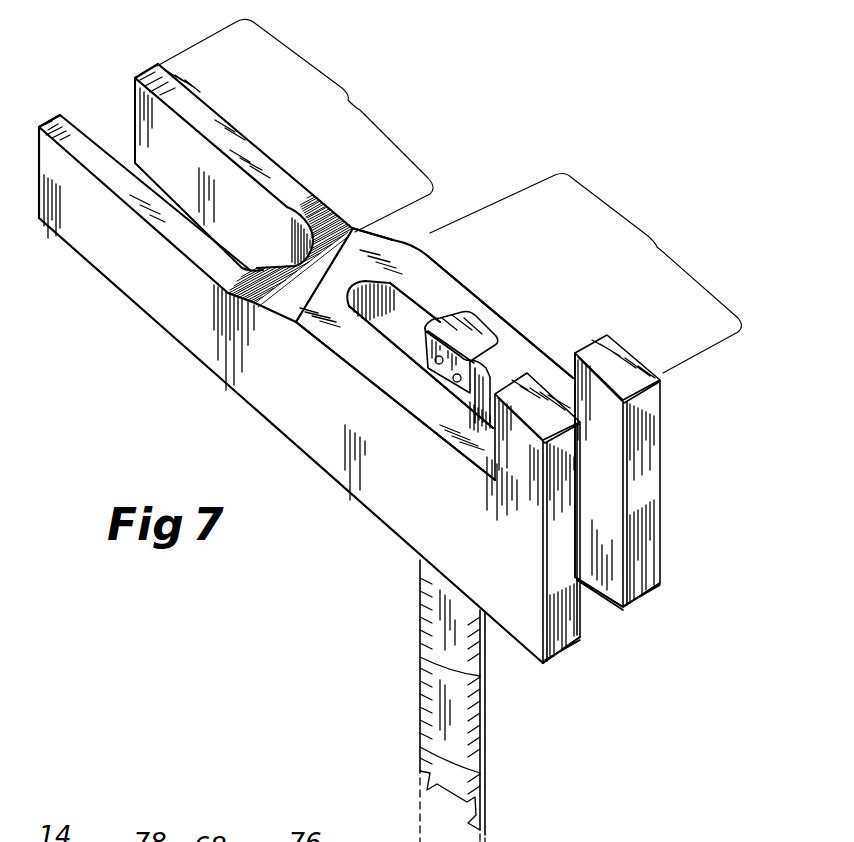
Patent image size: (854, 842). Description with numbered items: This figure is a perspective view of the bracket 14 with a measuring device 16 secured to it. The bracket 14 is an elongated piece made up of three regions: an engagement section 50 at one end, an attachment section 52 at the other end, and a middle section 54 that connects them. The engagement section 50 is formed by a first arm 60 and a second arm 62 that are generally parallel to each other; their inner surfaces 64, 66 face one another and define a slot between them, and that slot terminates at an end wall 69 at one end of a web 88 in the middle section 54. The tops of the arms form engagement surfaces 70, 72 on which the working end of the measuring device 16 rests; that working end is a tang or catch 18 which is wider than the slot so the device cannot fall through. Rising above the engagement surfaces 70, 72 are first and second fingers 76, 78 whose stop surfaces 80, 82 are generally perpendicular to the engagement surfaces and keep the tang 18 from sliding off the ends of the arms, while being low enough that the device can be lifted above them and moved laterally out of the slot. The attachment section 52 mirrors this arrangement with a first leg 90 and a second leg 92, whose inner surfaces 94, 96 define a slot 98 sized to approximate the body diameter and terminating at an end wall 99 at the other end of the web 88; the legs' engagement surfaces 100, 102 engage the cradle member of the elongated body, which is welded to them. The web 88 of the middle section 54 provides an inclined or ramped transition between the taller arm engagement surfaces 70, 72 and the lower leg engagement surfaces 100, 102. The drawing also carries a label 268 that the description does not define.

The bracket 14 is at (188, 424).
The measuring device 16 is at (447, 745).
The tang or catch 18 is at (486, 331).
The engagement section 50 is at (684, 231).
The attachment section 52 is at (368, 77).
The middle section 54 is at (412, 230).
The first arm 60 is at (418, 508).
The second arm 62 is at (470, 298).
The inner surface 64 is at (581, 623).
The inner surface 66 is at (610, 580).
The end wall 69 is at (452, 291).
The engagement surface 70 is at (443, 412).
The engagement surface 72 is at (452, 290).
The first finger 76 is at (532, 388).
The second finger 78 is at (632, 366).
The stop surface 80 is at (485, 441).
The stop surface 82 is at (572, 367).
The web 88 is at (350, 255).
The first leg 90 is at (100, 240).
The second leg 92 is at (213, 107).
The inner surface 94 is at (81, 127).
The inner surface 96 is at (141, 111).
The slot 98 is at (110, 126).
The end wall 99 is at (300, 260).
The engagement surface 100 is at (178, 230).
The engagement surface 102 is at (298, 189).
The post front face 268 is at (633, 495).